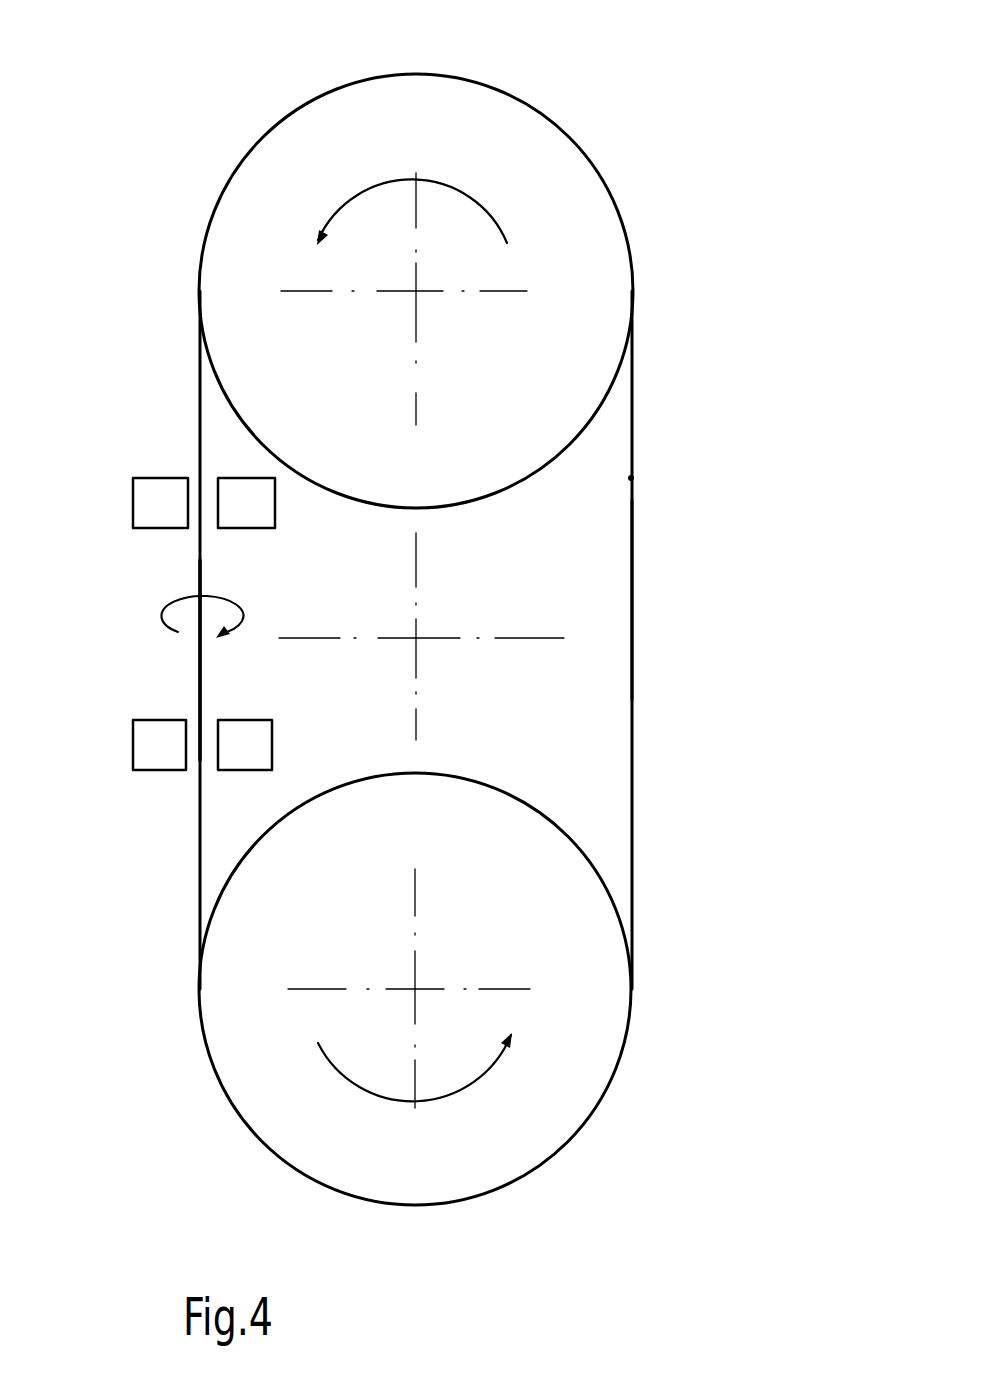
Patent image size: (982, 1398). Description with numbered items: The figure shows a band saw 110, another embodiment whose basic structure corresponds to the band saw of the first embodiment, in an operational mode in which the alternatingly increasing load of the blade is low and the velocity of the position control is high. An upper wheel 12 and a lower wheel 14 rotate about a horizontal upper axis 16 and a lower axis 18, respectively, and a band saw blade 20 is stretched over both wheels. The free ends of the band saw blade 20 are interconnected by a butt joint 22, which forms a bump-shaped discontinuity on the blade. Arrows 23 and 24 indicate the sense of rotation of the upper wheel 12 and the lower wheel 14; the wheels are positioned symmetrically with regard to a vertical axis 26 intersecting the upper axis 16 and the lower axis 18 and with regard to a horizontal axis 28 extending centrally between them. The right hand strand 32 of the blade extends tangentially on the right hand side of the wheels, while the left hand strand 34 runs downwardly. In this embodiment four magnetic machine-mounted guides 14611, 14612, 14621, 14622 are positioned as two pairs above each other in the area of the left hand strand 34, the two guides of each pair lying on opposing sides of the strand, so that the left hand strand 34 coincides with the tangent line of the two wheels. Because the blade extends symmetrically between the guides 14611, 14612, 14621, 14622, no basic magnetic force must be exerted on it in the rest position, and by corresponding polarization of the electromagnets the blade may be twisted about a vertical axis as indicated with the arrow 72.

The band saw 110 is at (676, 110).
The upper wheel 12 is at (597, 223).
The lower wheel 14 is at (575, 1099).
The upper axis 16 is at (420, 293).
The lower axis 18 is at (417, 986).
The band saw blade 20 is at (640, 785).
The butt joint 22 is at (633, 480).
The arrow 23 is at (462, 195).
The arrow 24 is at (368, 1090).
The vertical axis 26 is at (418, 550).
The horizontal axis 28 is at (543, 640).
The right hand strand 32 is at (633, 600).
The left hand strand 34 is at (202, 687).
The arrow 72 is at (178, 598).
The magnetic machine-mounted guide 14611 is at (145, 500).
The magnetic machine-mounted guide 14612 is at (265, 507).
The magnetic machine-mounted guide 14621 is at (145, 743).
The magnetic machine-mounted guide 14622 is at (262, 743).